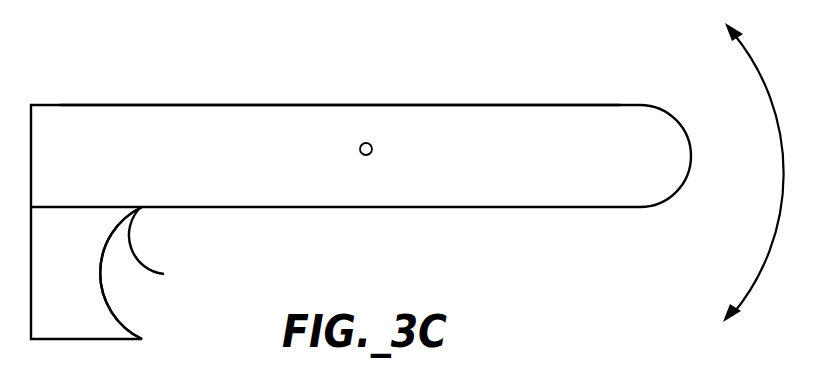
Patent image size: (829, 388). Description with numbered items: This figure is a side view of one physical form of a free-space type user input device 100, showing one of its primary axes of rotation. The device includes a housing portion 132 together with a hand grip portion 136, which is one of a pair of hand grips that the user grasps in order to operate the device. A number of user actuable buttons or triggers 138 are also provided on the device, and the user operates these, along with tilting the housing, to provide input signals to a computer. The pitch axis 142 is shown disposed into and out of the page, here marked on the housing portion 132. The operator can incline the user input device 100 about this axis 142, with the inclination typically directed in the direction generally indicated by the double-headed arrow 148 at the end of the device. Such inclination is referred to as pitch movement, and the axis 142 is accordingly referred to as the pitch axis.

The user input device 100 is at (473, 46).
The housing portion 132 is at (239, 120).
The hand grip portion 136 is at (118, 322).
The user actuable buttons (triggers) 138 is at (140, 255).
The pitch axis 142 is at (366, 142).
The arrow 148 is at (762, 80).